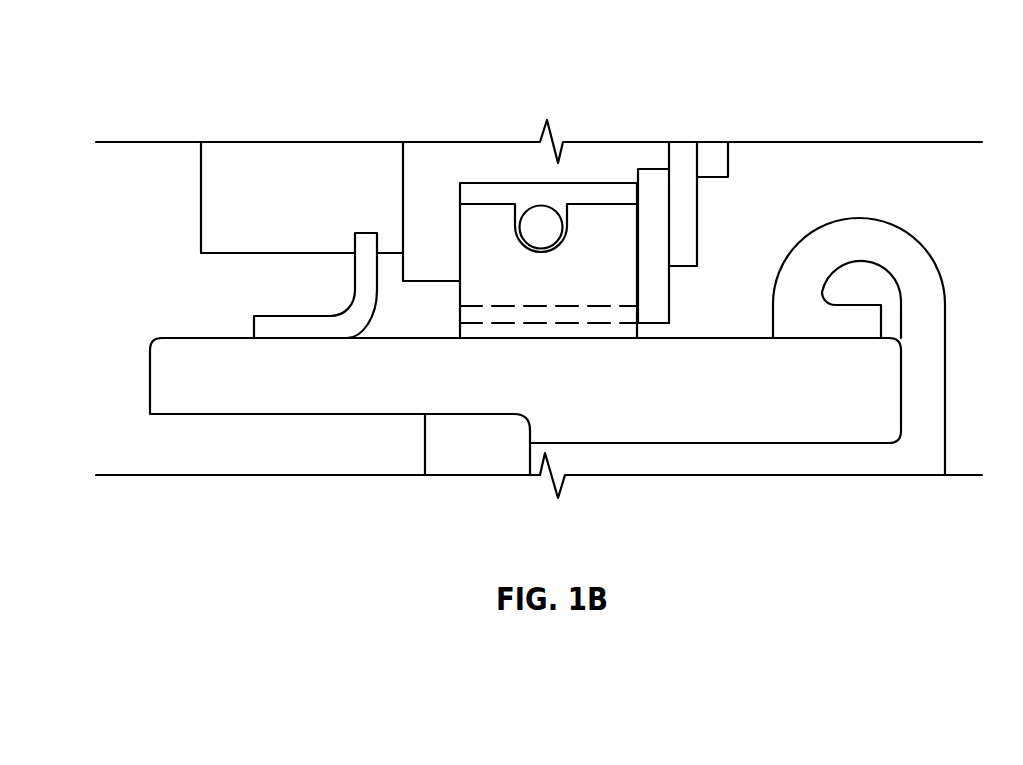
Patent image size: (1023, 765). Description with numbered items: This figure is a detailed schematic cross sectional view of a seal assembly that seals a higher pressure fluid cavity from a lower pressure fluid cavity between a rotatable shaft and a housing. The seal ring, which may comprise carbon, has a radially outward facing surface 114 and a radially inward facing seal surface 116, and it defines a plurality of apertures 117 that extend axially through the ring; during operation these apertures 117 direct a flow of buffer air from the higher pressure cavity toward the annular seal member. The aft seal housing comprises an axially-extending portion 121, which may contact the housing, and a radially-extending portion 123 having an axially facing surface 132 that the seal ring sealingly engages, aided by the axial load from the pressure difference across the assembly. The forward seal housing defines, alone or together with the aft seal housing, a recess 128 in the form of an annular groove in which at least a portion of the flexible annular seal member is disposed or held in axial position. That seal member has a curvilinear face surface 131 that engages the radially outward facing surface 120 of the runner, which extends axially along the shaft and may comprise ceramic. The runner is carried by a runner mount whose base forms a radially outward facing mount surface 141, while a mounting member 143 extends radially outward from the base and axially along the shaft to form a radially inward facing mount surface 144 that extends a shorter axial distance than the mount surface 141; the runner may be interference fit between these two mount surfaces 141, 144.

The radially outward facing surface 114 is at (596, 203).
The radially inward facing seal surface 116 is at (586, 337).
The apertures 117 is at (498, 313).
The radially outward facing surface 120 is at (175, 337).
The axially-extending portion 121 is at (498, 176).
The radially-extending portion 123 is at (408, 268).
The recess 128 is at (355, 240).
The curvilinear face surface 131 is at (378, 322).
The axially facing surface 132 is at (463, 228).
The radially outward facing mount surface 141 is at (693, 442).
The mounting member 143 is at (916, 255).
The radially inward facing mount surface 144 is at (800, 340).